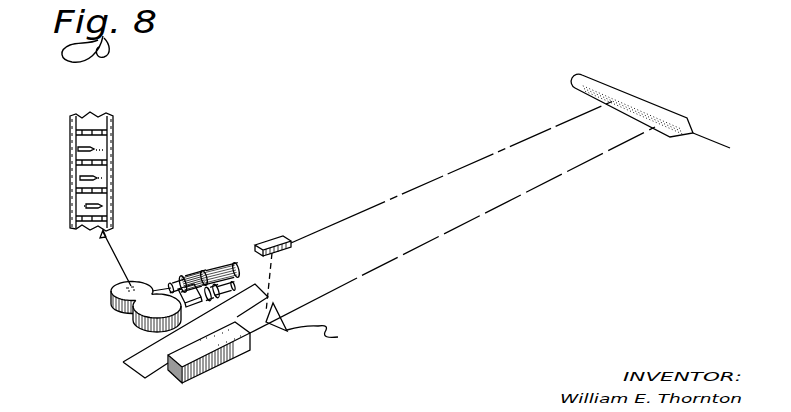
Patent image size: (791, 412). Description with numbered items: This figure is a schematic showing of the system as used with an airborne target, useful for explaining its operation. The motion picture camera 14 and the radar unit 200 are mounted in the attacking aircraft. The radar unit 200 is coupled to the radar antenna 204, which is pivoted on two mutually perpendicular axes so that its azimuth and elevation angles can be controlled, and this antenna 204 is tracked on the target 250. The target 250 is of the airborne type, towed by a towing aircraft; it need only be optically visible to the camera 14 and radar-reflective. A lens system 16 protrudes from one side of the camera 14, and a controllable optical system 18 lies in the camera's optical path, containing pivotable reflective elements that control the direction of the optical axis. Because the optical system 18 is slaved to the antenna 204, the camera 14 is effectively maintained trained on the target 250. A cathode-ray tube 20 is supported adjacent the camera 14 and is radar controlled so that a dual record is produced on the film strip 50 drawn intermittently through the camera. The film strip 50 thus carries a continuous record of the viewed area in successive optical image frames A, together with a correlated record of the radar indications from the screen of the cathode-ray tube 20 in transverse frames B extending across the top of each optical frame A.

The film strip 50 is at (100, 121).
The motion picture camera 14 is at (115, 291).
The lens system 16 is at (206, 271).
The cathode-ray tube 20 is at (240, 264).
The controllable optical system 18 is at (305, 257).
The radar antenna 204 is at (277, 303).
The radar unit 200 is at (220, 370).
The target 250 is at (644, 94).
The optical frame A is at (128, 185).
The transverse frame B is at (75, 192).